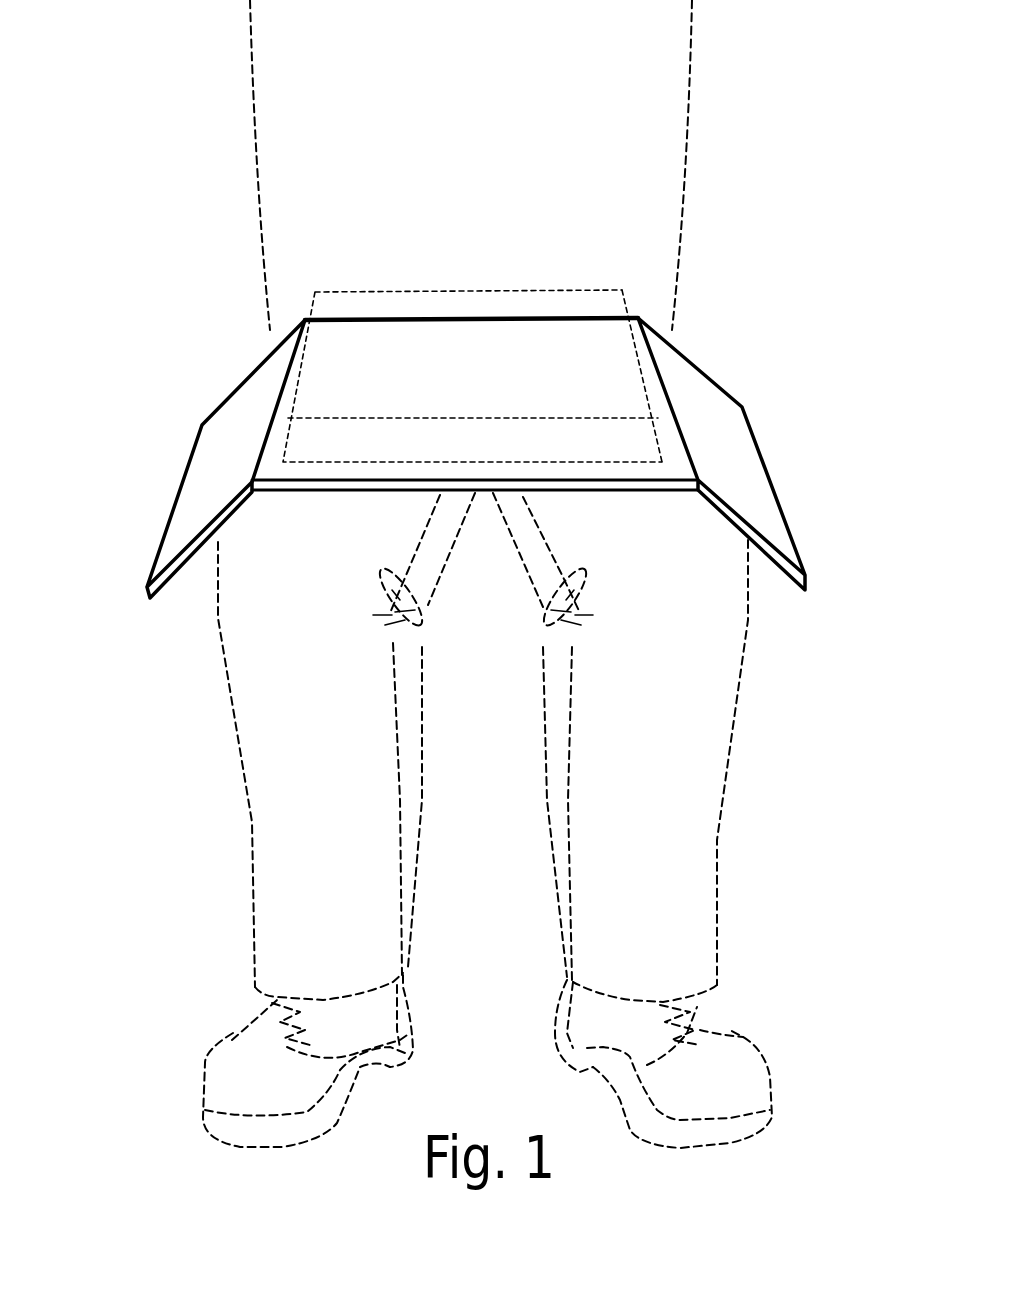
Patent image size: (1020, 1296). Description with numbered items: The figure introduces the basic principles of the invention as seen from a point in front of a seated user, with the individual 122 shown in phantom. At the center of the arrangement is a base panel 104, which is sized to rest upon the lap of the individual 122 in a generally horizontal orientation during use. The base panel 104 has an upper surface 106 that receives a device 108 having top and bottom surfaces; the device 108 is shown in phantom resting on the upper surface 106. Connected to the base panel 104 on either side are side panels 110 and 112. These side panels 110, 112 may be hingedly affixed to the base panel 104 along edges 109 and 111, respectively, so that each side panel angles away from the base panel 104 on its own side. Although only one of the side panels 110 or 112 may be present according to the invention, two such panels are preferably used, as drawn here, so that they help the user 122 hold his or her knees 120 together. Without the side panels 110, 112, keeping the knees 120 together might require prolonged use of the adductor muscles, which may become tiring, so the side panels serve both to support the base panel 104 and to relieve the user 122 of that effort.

The base panel 104 is at (618, 480).
The upper surface 106 is at (673, 462).
The device 108 is at (558, 300).
The edge 109 is at (287, 367).
The side panel 110 is at (215, 453).
The edge 111 is at (660, 370).
The side panel 112 is at (748, 482).
The knees 120 is at (598, 632).
The individual 122 is at (487, 574).